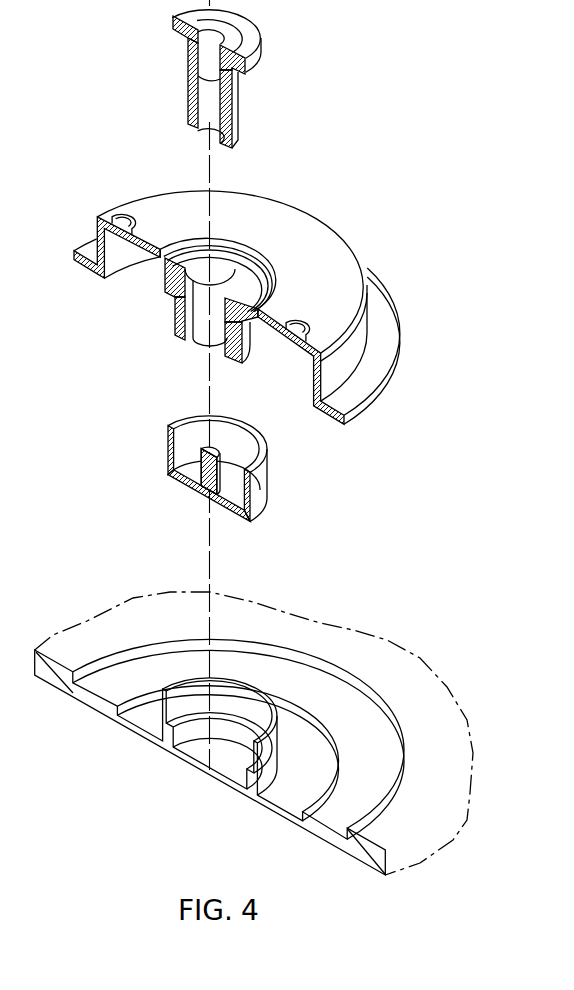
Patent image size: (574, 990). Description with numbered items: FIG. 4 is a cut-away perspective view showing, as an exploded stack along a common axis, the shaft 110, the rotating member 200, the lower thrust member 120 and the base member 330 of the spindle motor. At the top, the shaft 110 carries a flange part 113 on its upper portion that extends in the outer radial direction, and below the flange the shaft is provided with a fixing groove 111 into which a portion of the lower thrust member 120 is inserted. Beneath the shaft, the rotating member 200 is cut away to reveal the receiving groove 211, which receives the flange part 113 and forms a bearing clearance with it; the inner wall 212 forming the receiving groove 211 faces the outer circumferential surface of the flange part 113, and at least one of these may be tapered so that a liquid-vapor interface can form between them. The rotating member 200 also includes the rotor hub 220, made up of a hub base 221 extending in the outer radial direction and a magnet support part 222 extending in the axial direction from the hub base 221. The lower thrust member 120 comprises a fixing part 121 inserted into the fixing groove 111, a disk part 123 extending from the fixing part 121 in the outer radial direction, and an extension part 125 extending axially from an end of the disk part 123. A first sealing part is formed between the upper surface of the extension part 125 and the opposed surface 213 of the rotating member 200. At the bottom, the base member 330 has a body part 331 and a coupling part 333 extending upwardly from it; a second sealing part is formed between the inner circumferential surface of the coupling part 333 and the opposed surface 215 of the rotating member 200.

The shaft 110 is at (333, 55).
The flange part 113 is at (246, 60).
The fixing groove 111 is at (228, 104).
The rotating member 200 is at (345, 213).
The rotor hub 220 is at (117, 151).
The hub base 221 is at (143, 216).
The magnet support part 222 is at (99, 226).
The inner wall 212 is at (197, 268).
The receiving groove 211 is at (231, 281).
The surface of the rotating member opposed to the extension part 213 is at (175, 292).
The surface of the rotating member opposed to the coupling part 215 is at (166, 286).
The lower thrust member 120 is at (183, 573).
The extension part 125 is at (168, 468).
The disk part 123 is at (184, 482).
The fixing part 121 is at (208, 497).
The base member 330 is at (143, 827).
The body part 331 is at (131, 720).
The coupling part 333 is at (164, 722).